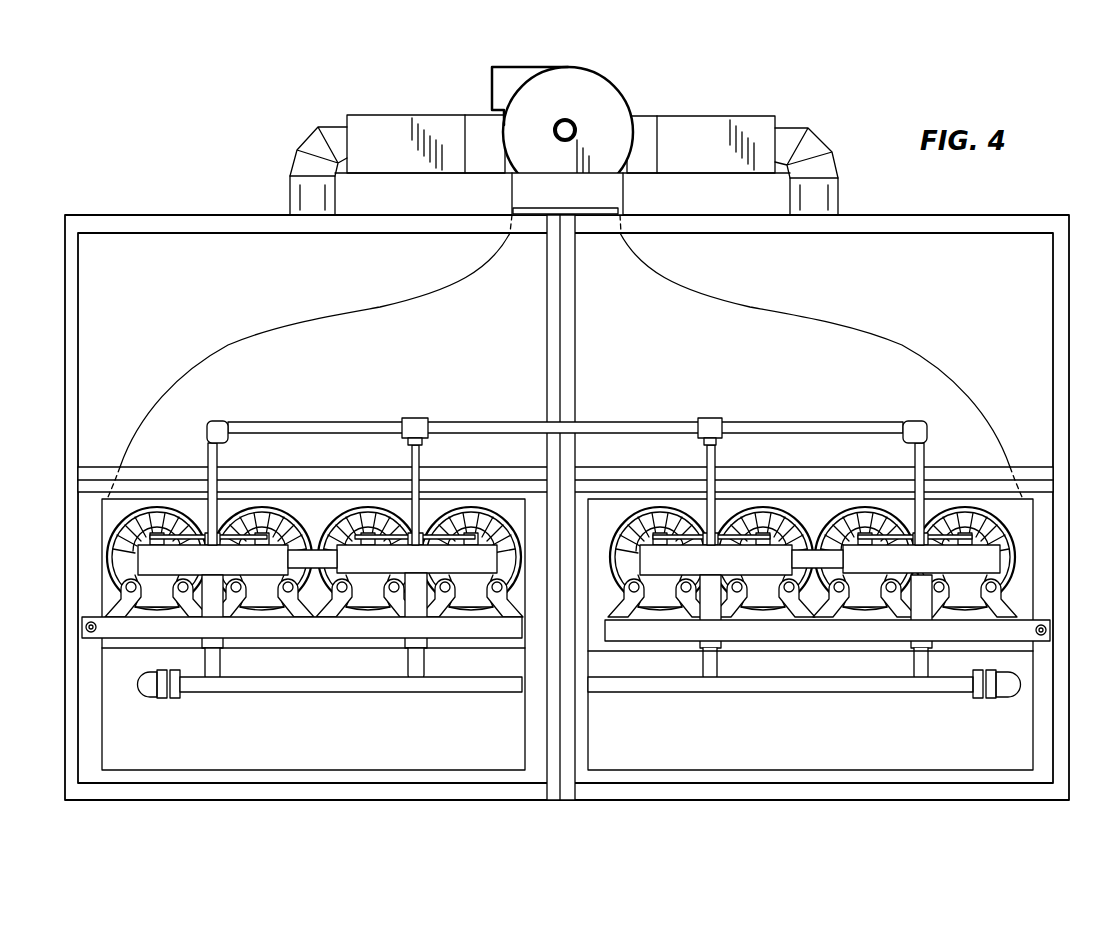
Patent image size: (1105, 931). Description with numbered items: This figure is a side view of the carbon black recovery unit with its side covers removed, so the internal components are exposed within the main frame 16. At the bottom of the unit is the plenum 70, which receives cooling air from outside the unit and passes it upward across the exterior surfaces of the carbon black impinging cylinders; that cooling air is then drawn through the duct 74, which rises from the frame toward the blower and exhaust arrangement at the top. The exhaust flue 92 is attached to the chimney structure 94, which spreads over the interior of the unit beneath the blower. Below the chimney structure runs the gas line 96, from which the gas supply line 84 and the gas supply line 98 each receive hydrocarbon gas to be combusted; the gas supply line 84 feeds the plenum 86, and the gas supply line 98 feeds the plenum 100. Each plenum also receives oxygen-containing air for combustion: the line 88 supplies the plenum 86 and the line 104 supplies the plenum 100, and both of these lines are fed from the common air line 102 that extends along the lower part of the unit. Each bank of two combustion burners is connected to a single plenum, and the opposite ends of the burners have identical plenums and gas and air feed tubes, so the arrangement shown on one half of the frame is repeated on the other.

The main frame 16 is at (65, 280).
The plenum 70 is at (319, 753).
The duct 74 is at (300, 276).
The gas supply line 84 is at (207, 446).
The plenum 86 is at (227, 571).
The line 88 is at (215, 628).
The exhaust flue 92 is at (612, 212).
The chimney structure 94 is at (518, 383).
The gas line 96 is at (347, 420).
The gas supply line 98 is at (418, 457).
The plenum 100 is at (432, 571).
The air line 102 is at (348, 686).
The line 104 is at (425, 628).